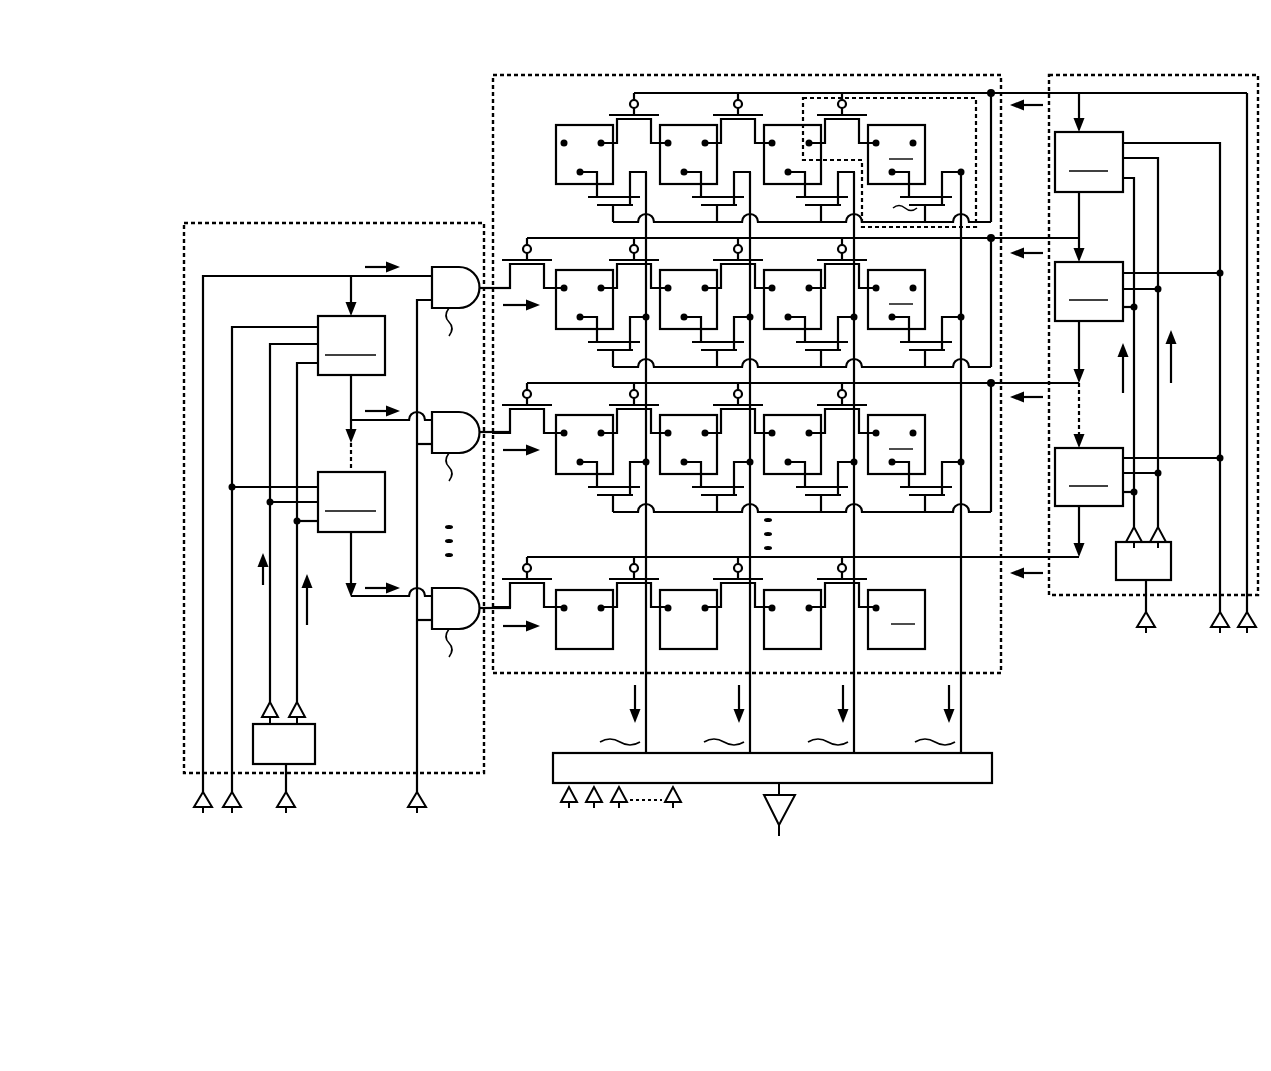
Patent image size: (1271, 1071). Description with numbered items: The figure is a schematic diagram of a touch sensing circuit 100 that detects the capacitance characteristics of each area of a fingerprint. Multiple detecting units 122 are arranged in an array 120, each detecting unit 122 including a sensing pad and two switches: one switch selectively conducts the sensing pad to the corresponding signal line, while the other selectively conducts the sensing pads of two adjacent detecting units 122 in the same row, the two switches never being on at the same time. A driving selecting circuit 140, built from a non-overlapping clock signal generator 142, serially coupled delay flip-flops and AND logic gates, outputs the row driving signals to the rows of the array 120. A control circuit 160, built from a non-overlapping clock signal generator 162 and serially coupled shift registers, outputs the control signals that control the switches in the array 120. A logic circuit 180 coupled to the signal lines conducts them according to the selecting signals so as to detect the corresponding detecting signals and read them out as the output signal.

The touch sensing circuit 100 is at (200, 78).
The array 120 is at (522, 76).
The detecting unit 122 is at (803, 113).
The driving selecting circuit 140 is at (383, 223).
The non-overlapping clock signal generator 142 is at (302, 755).
The control circuit 160 is at (1152, 76).
The non-overlapping clock signal generator 162 is at (1162, 572).
The logic circuit 180 is at (790, 778).